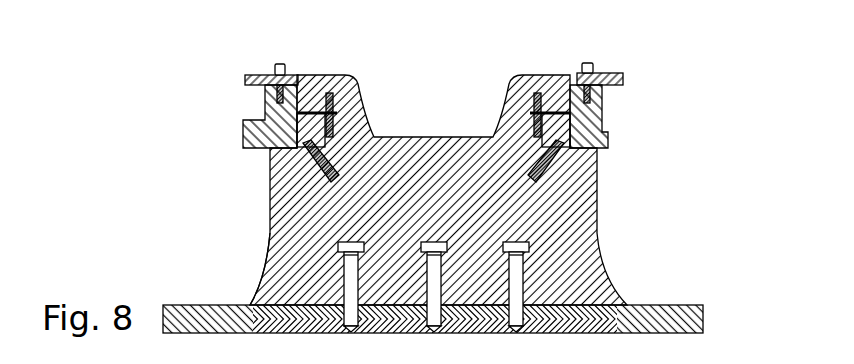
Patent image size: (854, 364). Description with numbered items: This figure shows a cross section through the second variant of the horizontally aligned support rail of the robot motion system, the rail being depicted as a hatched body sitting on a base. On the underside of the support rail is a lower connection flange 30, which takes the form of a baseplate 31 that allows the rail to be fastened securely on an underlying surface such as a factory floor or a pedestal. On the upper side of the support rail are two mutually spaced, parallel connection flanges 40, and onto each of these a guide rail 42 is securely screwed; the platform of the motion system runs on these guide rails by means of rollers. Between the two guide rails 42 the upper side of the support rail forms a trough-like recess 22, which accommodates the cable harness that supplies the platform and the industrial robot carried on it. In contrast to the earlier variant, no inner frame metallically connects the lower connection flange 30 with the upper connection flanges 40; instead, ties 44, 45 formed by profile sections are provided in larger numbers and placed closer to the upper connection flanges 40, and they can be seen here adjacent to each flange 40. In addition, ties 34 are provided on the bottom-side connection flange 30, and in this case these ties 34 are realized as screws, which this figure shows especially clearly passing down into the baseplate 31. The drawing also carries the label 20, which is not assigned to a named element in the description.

The rail support assembly 20 is at (258, 293).
The trough-like recess 22 is at (397, 97).
The connection flange 30 is at (384, 295).
The baseplate 31 is at (164, 326).
The ties 34 is at (342, 277).
The connection flange 40 is at (275, 124).
The guide rail 42 is at (252, 80).
The tie 44 is at (308, 153).
The tie 45 is at (310, 113).